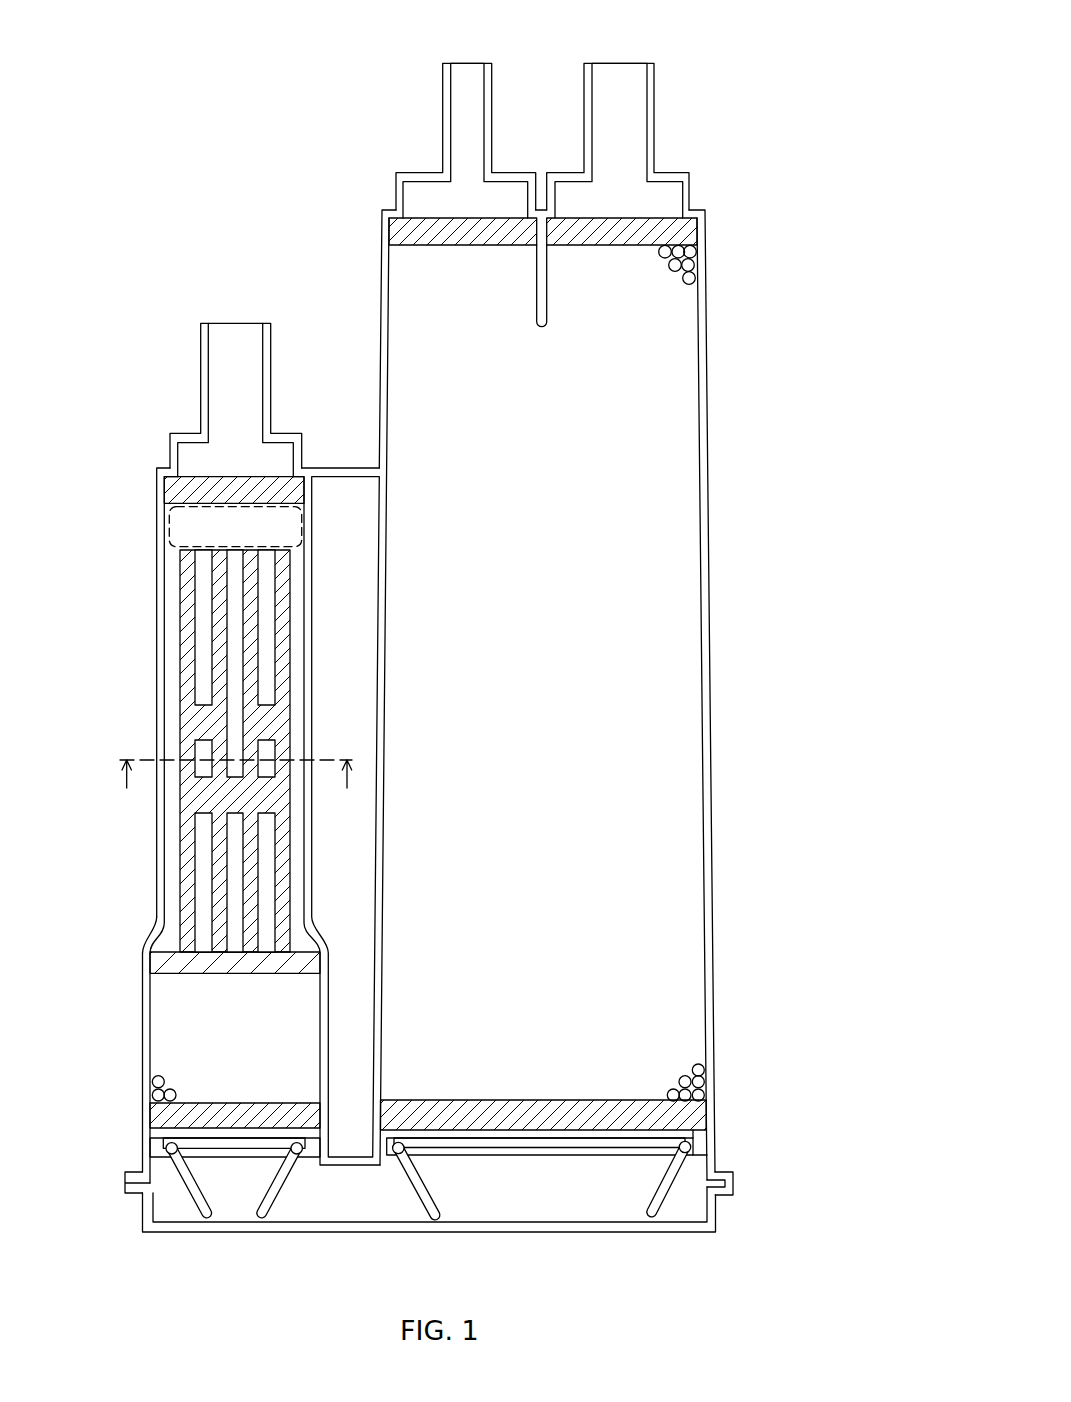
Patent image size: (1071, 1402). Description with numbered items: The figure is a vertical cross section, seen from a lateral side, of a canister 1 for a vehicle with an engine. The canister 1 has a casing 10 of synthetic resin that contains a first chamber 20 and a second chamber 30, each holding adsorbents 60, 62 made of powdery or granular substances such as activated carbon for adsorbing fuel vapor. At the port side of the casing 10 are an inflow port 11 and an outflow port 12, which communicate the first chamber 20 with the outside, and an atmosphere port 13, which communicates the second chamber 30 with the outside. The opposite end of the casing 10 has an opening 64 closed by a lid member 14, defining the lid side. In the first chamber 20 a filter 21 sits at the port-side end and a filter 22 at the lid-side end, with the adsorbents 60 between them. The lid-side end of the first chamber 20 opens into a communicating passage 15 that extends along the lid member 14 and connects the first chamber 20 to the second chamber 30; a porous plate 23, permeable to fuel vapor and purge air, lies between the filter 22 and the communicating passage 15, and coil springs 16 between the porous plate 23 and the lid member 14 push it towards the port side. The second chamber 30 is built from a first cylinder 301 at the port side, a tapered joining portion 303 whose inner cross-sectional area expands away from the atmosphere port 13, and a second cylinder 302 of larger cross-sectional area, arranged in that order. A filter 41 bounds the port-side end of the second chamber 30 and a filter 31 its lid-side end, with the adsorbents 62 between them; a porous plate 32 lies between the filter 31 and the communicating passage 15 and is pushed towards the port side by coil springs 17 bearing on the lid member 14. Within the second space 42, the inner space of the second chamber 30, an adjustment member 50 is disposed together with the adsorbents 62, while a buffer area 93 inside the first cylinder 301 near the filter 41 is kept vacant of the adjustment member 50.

The canister 1 is at (190, 95).
The casing 10 is at (765, 55).
The inflow port 11 is at (654, 105).
The outflow port 12 is at (443, 108).
The atmosphere port 13 is at (200, 362).
The lid member 14 is at (488, 1230).
The communicating passage 15 is at (582, 1195).
The coil springs 16 is at (671, 1197).
The coil springs 17 is at (192, 1187).
The first chamber 20 is at (710, 660).
The filter 21 is at (398, 233).
The filter 22 is at (694, 1116).
The porous plate 23 is at (698, 1143).
The second chamber 30 is at (157, 676).
The first cylinder 301 is at (157, 718).
The second cylinder 302 is at (142, 1007).
The joining portion 303 is at (151, 937).
The filter 31 is at (165, 1115).
The porous plate 32 is at (160, 1141).
The filter 41 is at (170, 495).
The second space 42 is at (180, 605).
The adjustment member 50 is at (180, 849).
The adsorbents 60 is at (690, 282).
The adsorbents 62 is at (157, 1082).
The opening 64 is at (706, 1186).
The buffer area 93 is at (170, 546).